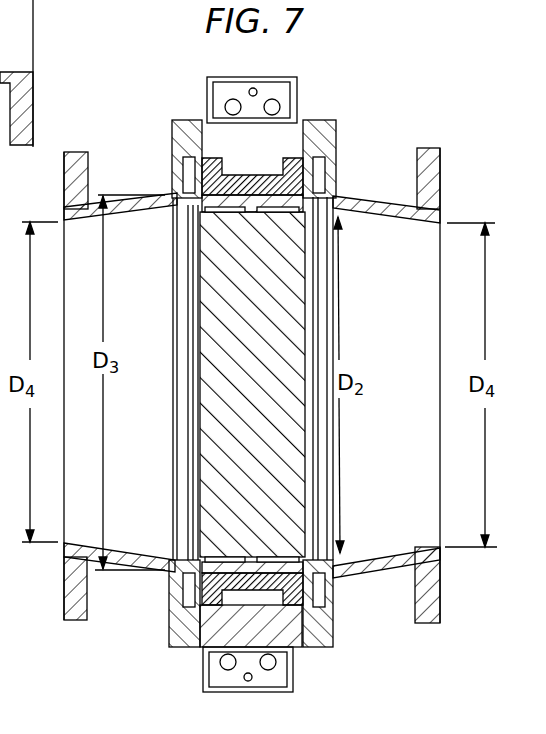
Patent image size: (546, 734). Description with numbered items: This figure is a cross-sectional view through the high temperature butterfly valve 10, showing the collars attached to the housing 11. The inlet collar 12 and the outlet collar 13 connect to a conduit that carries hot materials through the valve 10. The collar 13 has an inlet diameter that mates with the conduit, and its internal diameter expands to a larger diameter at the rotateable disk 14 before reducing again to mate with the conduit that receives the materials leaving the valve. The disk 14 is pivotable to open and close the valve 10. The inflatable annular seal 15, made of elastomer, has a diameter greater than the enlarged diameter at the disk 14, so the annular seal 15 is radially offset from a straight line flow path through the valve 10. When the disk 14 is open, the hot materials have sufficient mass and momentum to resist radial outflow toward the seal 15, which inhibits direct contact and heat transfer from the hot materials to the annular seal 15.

The high temperature butterfly valve 10 is at (394, 79).
The housing 11 is at (318, 120).
The inlet collar 12 is at (89, 153).
The outlet collar 13 is at (380, 197).
The rotateable disk 14 is at (281, 512).
The inflatable annular seal 15 is at (188, 585).